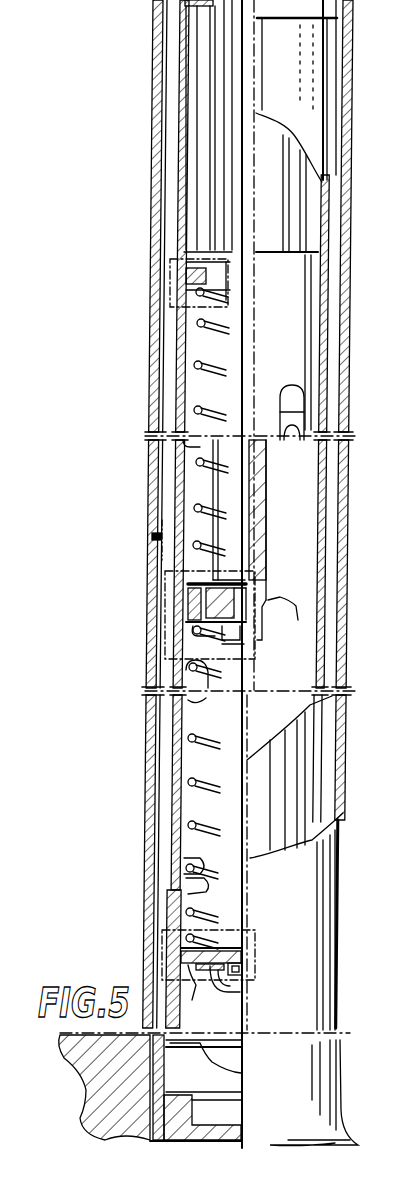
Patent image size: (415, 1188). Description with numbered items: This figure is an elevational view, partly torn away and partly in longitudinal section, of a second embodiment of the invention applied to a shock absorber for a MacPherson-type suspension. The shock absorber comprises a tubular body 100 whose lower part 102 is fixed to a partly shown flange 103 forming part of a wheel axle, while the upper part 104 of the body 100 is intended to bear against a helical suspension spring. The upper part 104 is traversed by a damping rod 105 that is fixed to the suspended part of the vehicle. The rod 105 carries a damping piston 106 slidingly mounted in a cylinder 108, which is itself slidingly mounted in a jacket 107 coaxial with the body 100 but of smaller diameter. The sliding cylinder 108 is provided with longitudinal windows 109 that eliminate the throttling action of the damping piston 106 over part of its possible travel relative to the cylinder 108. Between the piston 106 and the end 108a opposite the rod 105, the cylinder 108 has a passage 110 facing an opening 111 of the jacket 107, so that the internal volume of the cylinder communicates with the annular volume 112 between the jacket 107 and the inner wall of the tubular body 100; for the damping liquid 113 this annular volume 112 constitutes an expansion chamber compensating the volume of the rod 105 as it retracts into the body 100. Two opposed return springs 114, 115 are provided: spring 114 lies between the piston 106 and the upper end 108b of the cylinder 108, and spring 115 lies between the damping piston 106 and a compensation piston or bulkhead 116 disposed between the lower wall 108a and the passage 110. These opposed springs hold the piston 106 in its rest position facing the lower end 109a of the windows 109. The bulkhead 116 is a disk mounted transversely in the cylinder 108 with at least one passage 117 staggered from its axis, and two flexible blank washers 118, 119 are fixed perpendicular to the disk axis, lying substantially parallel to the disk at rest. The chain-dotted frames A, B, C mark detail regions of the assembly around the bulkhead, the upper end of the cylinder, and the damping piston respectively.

The tubular body 100 is at (343, 582).
The lower part of tubular body 102 is at (196, 1115).
The flange 103 is at (98, 1092).
The upper part of tubular body 104 is at (349, 72).
The damping rod 105 is at (235, 72).
The damping piston 106 is at (186, 600).
The jacket 107 is at (321, 663).
The sliding cylinder 108 is at (295, 560).
The lower end of cylinder 108a is at (208, 1048).
The upper end of cylinder 108b is at (292, 258).
The longitudinal windows 109 is at (282, 410).
The lower end of windows 109a is at (281, 600).
The passage 110 is at (180, 860).
The opening 111 is at (183, 878).
The annular volume 112 is at (163, 392).
The damping liquid 113 is at (152, 537).
The return spring 114 is at (197, 350).
The return spring 115 is at (180, 795).
The compensation piston or bulkhead 116 is at (190, 975).
The passage of bulkhead 117 is at (230, 992).
The flexible blank washer 118 is at (220, 940).
The flexible blank washer 119 is at (252, 990).
The detail A is at (163, 946).
The detail B is at (174, 282).
The detail C is at (166, 648).